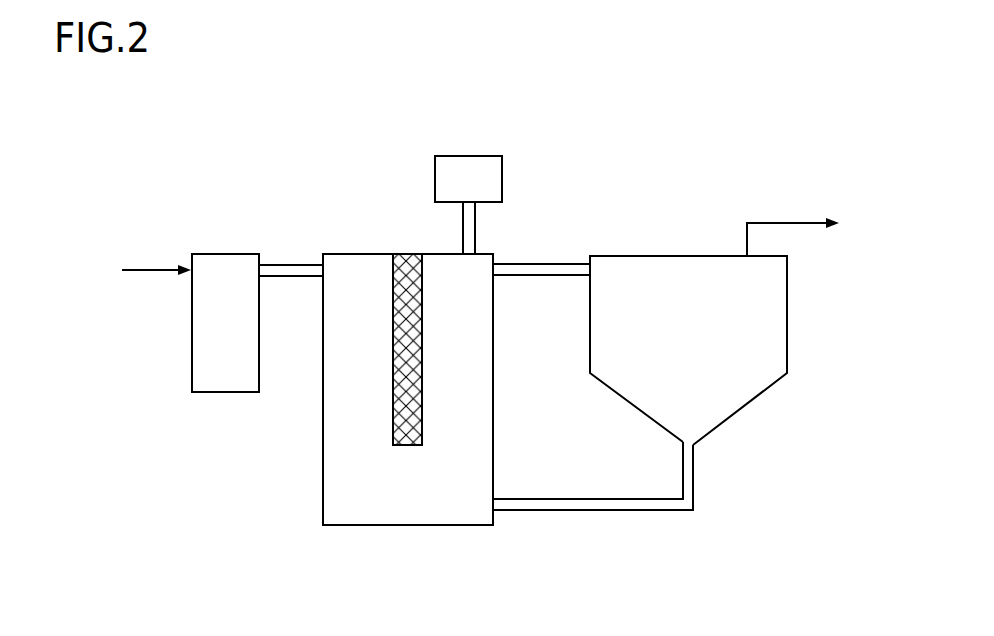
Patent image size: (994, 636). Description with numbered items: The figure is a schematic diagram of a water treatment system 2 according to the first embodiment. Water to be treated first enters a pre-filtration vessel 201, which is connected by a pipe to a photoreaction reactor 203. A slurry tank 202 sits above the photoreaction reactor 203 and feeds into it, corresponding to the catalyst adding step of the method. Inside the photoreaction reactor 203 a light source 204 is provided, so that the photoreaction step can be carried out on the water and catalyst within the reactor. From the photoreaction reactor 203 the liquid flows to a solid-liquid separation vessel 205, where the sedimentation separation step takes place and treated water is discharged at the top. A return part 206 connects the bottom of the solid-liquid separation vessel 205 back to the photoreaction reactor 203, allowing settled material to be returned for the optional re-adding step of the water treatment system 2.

The water treatment system 2 is at (473, 322).
The pre-filtration vessel 201 is at (222, 253).
The slurry tank 202 is at (467, 156).
The photoreaction reactor 203 is at (405, 526).
The light source 204 is at (394, 297).
The solid-liquid separation vessel 205 is at (637, 255).
The return part 206 is at (590, 511).